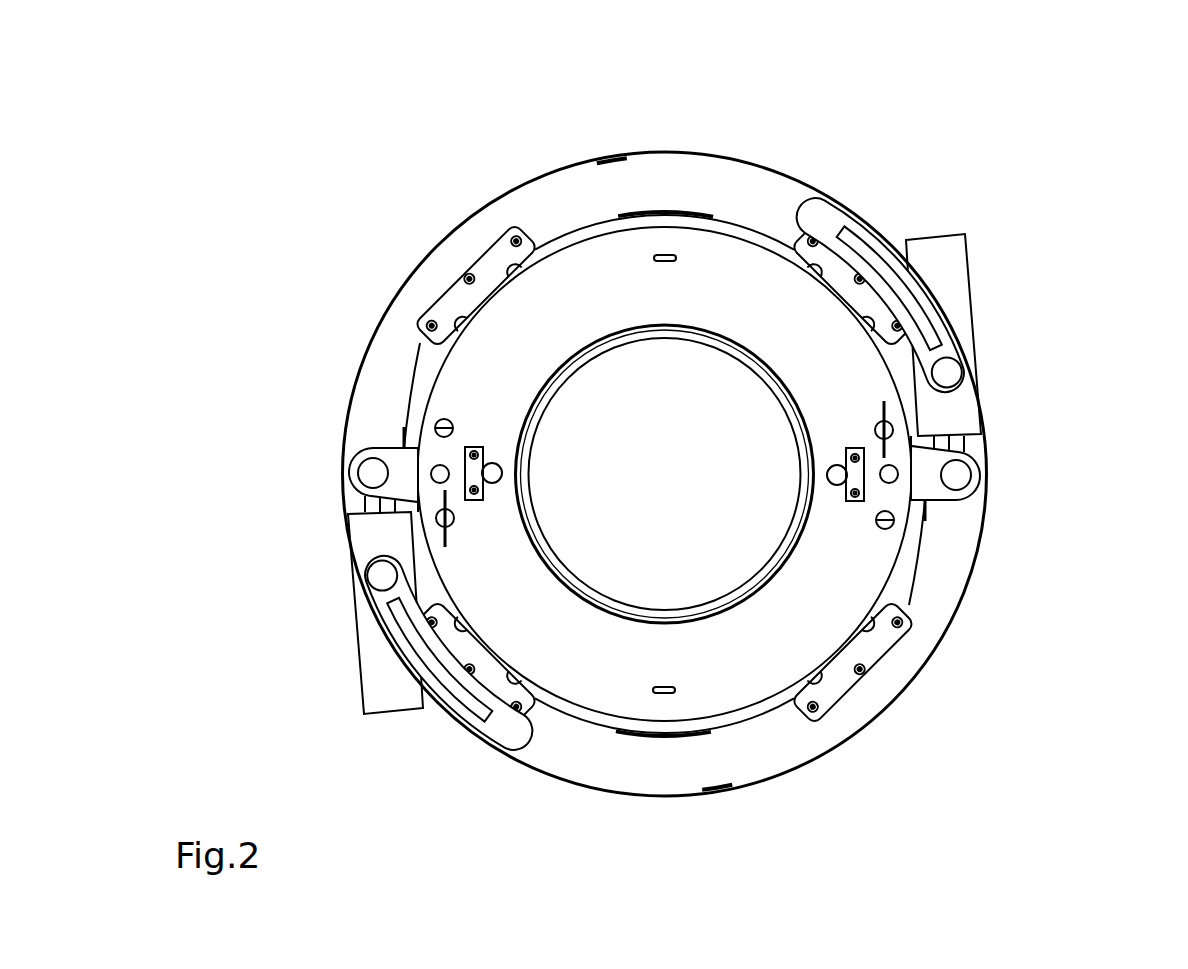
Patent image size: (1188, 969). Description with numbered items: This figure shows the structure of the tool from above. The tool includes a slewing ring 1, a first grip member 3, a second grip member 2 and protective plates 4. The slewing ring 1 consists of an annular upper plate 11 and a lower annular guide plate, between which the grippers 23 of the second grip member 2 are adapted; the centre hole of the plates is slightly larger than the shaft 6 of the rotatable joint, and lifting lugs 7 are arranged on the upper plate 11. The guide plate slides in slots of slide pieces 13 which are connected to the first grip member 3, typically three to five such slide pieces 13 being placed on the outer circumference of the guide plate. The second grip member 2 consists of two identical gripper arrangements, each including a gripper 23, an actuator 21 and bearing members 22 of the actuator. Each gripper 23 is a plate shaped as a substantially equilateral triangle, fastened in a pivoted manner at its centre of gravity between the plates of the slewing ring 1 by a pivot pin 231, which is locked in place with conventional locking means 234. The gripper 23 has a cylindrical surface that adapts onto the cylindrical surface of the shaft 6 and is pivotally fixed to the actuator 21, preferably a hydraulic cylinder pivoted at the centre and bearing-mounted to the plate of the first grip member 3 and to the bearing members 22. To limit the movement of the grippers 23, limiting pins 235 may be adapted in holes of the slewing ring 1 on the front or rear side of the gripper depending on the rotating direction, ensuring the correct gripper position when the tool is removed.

The slewing ring 1 is at (935, 583).
The second grip member 2 is at (752, 396).
The first grip member 3 is at (710, 768).
The protective plates 4 is at (690, 340).
The shaft 6 is at (568, 372).
The lifting lugs 7 is at (665, 255).
The upper plate 11 is at (715, 663).
The slide pieces 13 is at (868, 652).
The actuator 21 is at (942, 272).
The bearing members 22 is at (868, 228).
The gripper 23 is at (930, 485).
The pivot pin 231 is at (494, 468).
The locking means 234 is at (845, 455).
The limiting pins 235 is at (437, 522).